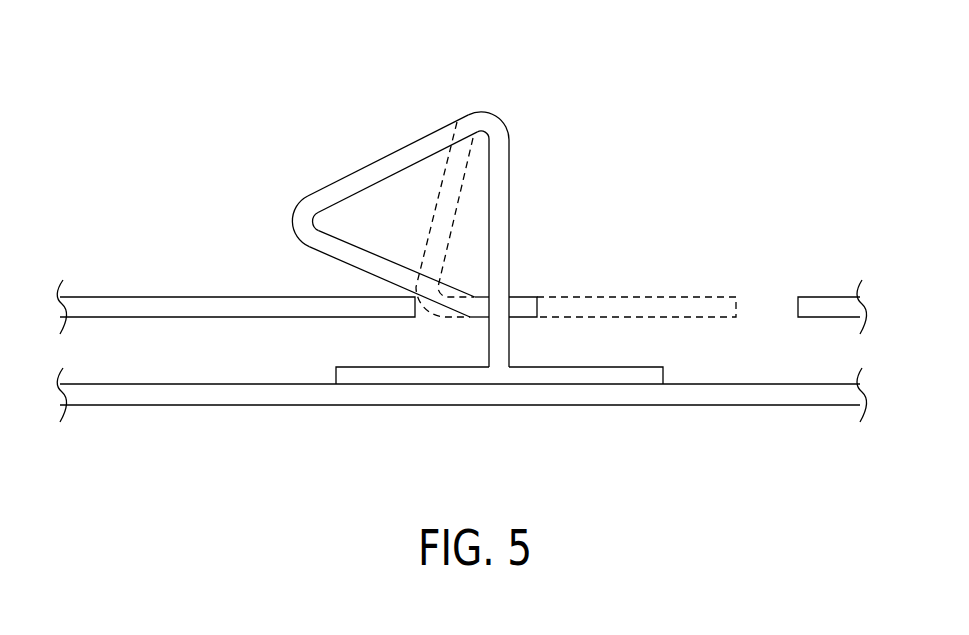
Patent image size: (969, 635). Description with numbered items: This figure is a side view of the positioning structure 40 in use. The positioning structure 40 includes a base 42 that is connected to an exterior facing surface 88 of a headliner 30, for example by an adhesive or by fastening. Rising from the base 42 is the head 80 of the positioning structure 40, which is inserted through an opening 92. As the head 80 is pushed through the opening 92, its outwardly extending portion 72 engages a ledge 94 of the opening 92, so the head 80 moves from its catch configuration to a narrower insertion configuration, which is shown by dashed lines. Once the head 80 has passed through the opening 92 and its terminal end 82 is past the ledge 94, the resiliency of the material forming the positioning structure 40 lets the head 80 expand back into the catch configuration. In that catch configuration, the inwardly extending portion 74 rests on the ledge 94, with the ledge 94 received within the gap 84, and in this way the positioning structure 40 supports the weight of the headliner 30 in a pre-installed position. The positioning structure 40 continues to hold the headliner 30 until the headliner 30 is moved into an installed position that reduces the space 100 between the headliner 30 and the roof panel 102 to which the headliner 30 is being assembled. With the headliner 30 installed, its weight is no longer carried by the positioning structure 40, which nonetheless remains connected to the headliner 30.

The headliner 30 is at (461, 395).
The positioning structure 40 is at (461, 250).
The base 42 is at (595, 367).
The outwardly extending portion 72 is at (422, 138).
The inwardly extending portion 74 is at (408, 253).
The head 80 is at (368, 197).
The terminal end 82 is at (292, 223).
The gap 84 is at (423, 343).
The exterior facing surface 88 is at (173, 385).
The opening 92 is at (767, 290).
The ledge 94 is at (379, 317).
The space 100 is at (757, 365).
The roof panel 102 is at (820, 300).